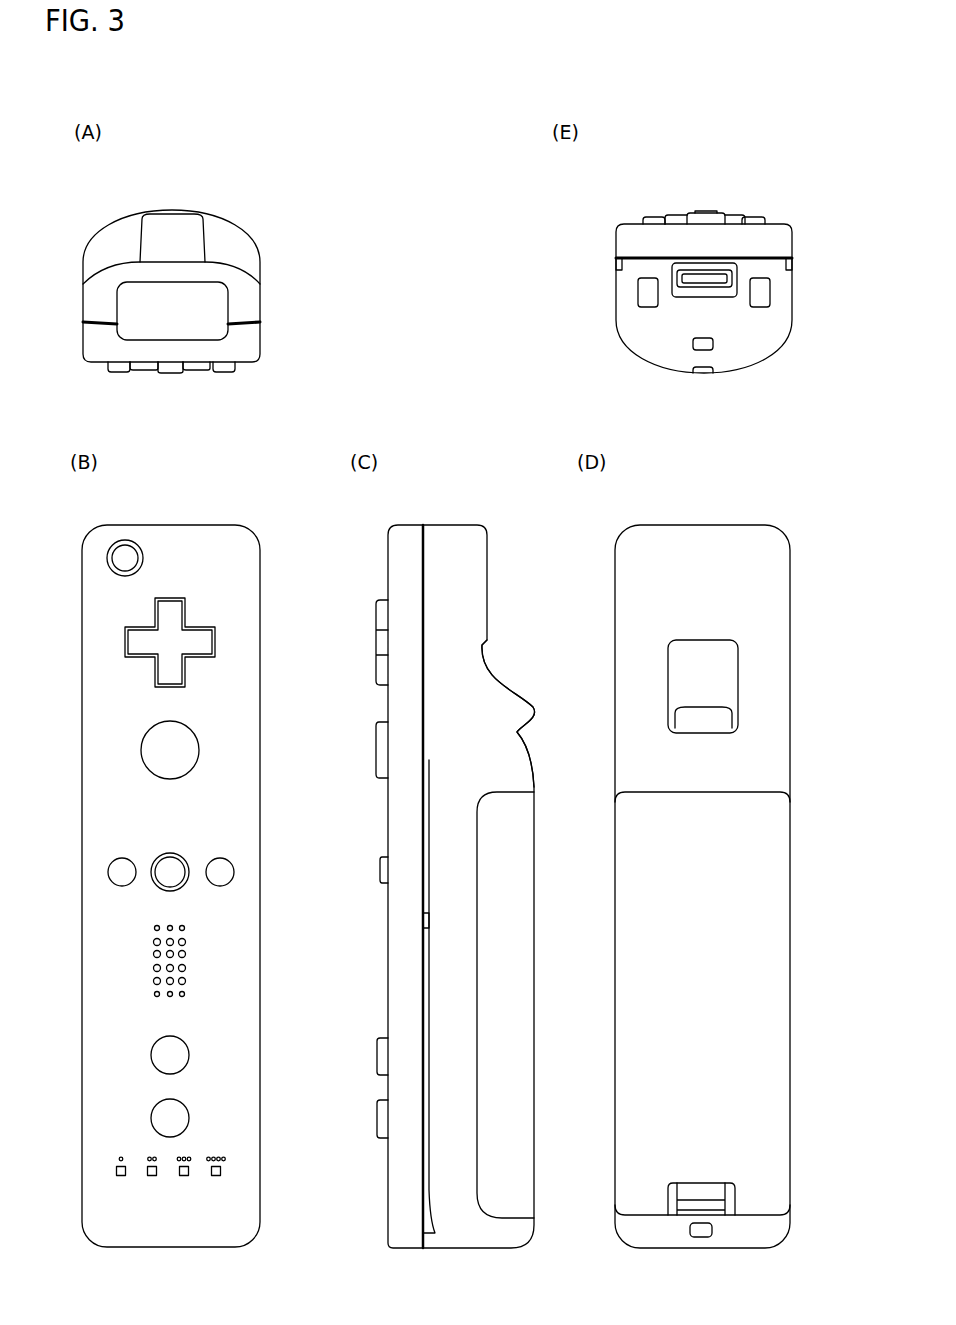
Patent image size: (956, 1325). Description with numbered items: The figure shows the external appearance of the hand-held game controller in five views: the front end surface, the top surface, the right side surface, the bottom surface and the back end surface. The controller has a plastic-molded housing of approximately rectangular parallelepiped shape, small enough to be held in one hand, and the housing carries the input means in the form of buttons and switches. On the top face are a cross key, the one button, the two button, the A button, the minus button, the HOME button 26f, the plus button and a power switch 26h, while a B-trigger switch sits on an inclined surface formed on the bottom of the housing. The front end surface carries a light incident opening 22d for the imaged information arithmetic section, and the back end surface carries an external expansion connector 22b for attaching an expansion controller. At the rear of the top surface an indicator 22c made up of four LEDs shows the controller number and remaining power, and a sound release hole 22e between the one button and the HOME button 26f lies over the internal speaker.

The external expansion connector 22b is at (692, 286).
The indicator 22c is at (233, 1173).
The light incident opening 22d is at (212, 311).
The sound release hole 22e is at (193, 953).
The HOME button 26f is at (170, 860).
The power switch 26h is at (125, 557).